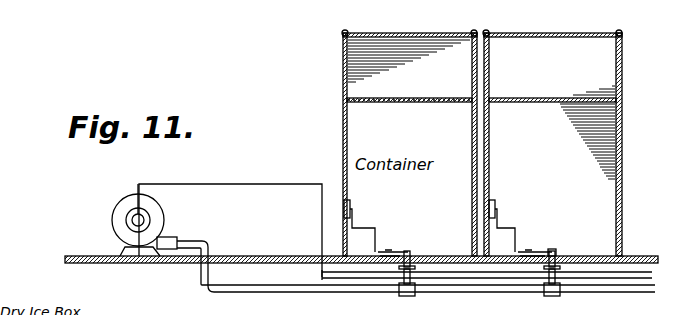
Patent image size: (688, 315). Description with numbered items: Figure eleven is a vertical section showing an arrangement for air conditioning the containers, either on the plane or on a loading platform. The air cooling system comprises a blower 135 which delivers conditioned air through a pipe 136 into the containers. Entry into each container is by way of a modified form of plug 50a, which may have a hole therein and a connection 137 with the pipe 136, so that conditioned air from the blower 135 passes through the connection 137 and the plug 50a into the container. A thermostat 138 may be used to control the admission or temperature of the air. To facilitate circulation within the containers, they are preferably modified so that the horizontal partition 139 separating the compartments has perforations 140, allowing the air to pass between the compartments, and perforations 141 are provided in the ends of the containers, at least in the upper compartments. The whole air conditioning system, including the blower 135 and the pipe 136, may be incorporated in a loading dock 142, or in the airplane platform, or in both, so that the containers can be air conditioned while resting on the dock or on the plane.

The blower 135 is at (115, 206).
The pipe 136 is at (259, 290).
The connection 137 is at (548, 288).
The thermostat 138 is at (351, 212).
The horizontal partition 139 is at (410, 98).
The perforations 140 is at (387, 102).
The perforations 141 is at (344, 63).
The loading dock 142 is at (78, 256).
The plug 50a is at (558, 260).